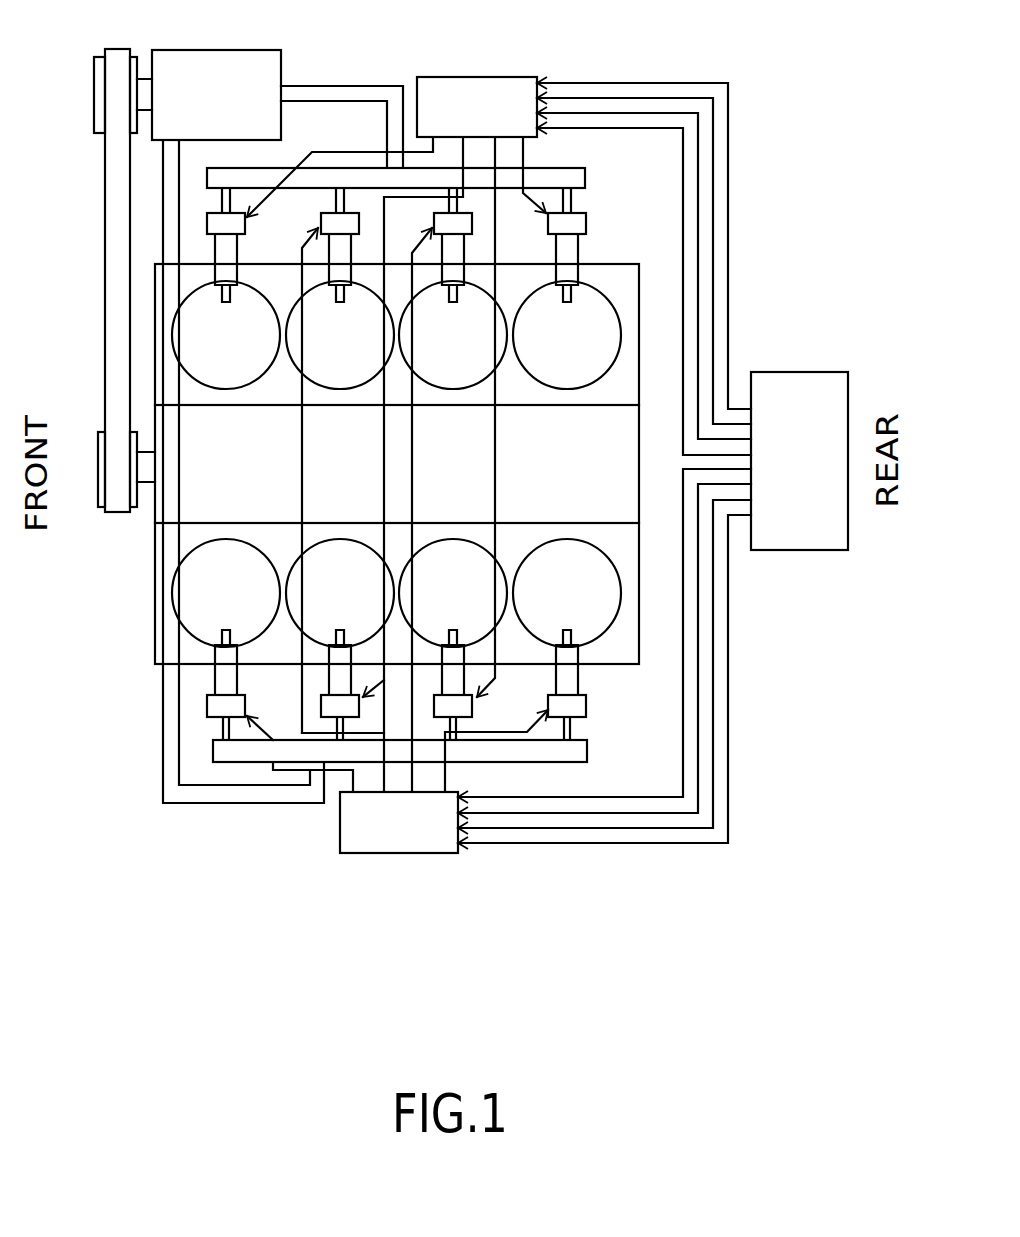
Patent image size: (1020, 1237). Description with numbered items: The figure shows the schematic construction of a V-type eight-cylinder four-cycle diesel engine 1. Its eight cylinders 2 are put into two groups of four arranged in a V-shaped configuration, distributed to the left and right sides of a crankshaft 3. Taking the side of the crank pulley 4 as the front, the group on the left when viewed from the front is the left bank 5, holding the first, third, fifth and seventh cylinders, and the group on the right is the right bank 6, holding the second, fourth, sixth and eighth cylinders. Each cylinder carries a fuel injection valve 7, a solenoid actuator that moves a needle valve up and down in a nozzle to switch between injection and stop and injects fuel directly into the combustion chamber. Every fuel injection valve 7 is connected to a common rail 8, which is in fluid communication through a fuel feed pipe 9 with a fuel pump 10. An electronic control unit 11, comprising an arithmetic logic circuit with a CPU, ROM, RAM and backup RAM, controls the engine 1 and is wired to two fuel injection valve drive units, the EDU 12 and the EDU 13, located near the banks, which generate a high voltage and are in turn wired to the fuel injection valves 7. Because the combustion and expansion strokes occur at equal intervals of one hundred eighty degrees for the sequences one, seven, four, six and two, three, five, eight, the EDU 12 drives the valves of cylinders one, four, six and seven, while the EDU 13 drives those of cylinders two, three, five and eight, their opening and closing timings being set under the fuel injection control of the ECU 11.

The four-cycle diesel engine 1 is at (778, 92).
The cylinder 2 is at (569, 543).
The crankshaft 3 is at (143, 475).
The crank pulley 4 is at (103, 506).
The left bank 5 is at (630, 300).
The right bank 6 is at (628, 660).
The fuel injection valve 7 is at (246, 229).
The common rail 8 is at (585, 178).
The fuel feed pipe 9 is at (337, 86).
The fuel pump 10 is at (222, 64).
The electronic control unit (ECU) 11 is at (801, 376).
The fuel injection valve drive unit (EDU) 12 is at (475, 78).
The fuel injection valve drive unit (EDU) 13 is at (407, 855).